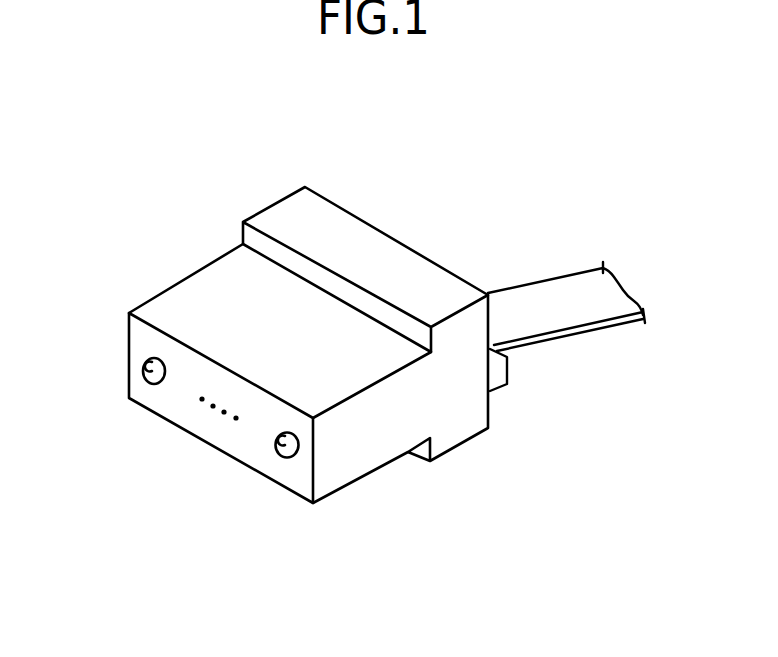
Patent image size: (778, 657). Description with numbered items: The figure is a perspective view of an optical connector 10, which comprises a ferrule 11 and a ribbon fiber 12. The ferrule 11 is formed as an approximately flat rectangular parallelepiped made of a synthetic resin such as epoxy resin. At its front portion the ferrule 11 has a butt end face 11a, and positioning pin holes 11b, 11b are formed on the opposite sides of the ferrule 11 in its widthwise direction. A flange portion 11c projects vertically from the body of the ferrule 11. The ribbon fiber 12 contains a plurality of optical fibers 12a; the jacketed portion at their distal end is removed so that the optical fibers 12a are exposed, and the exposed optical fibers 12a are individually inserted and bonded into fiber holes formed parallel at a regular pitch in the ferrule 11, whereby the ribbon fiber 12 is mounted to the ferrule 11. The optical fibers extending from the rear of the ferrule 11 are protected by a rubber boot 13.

The optical connector 10 is at (270, 129).
The ferrule 11 is at (372, 470).
The butt end face 11a is at (173, 407).
The positioning pin holes 11b is at (145, 368).
The flange portion 11c is at (362, 250).
The ribbon fiber 12 is at (578, 333).
The optical fibers 12a is at (234, 423).
The rubber boot 13 is at (501, 377).